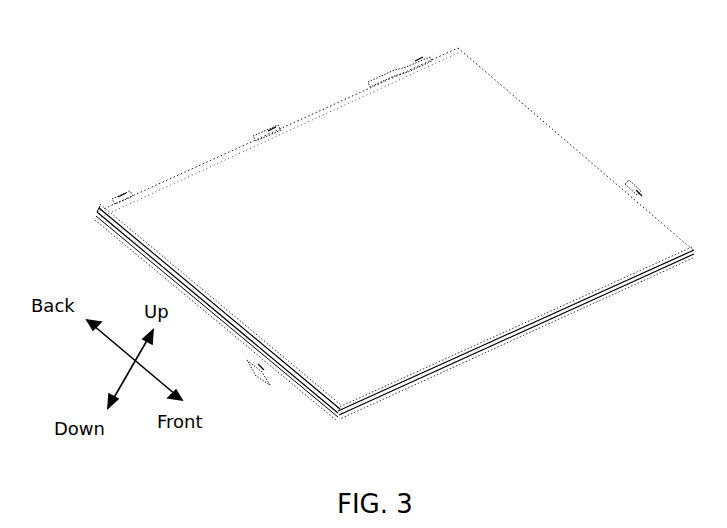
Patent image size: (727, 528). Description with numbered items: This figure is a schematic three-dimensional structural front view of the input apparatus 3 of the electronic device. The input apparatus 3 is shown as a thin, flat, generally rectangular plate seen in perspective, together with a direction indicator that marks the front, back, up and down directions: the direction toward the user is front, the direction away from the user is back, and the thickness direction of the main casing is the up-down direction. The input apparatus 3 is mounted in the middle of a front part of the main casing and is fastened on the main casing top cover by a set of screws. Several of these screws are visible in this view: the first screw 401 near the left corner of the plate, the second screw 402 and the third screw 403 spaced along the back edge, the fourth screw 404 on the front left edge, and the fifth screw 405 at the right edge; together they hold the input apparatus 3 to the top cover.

The input apparatus 3 is at (413, 353).
The first screw 401 is at (122, 195).
The second screw 402 is at (272, 127).
The third screw 403 is at (420, 58).
The fourth screw 404 is at (260, 365).
The fifth screw 405 is at (640, 192).